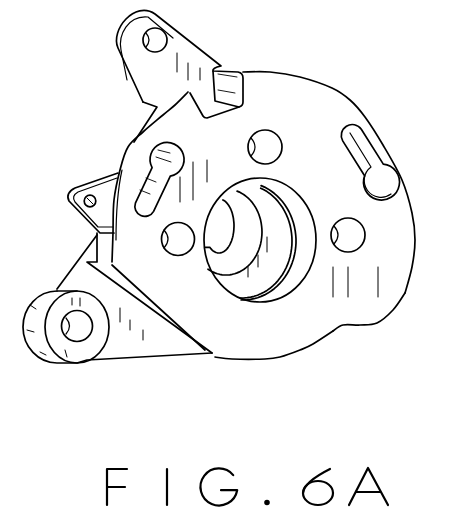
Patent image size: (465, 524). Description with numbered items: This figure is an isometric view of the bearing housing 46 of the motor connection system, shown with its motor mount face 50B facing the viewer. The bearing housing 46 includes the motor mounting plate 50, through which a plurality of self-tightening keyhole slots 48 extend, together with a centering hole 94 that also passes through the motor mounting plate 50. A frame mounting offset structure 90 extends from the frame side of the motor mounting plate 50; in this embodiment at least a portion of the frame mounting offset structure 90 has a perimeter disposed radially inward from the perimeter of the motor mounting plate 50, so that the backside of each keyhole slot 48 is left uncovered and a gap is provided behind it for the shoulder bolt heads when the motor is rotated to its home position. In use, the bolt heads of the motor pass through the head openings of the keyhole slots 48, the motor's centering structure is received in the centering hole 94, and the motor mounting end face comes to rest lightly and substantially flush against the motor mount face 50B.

The bearing housing 46 is at (359, 78).
The self-tightening keyhole slots 48 is at (169, 155).
The motor mounting plate 50 is at (417, 247).
The motor mount face 50B is at (378, 287).
The frame mounting offset structure 90 is at (177, 80).
The centering hole 94 is at (273, 290).